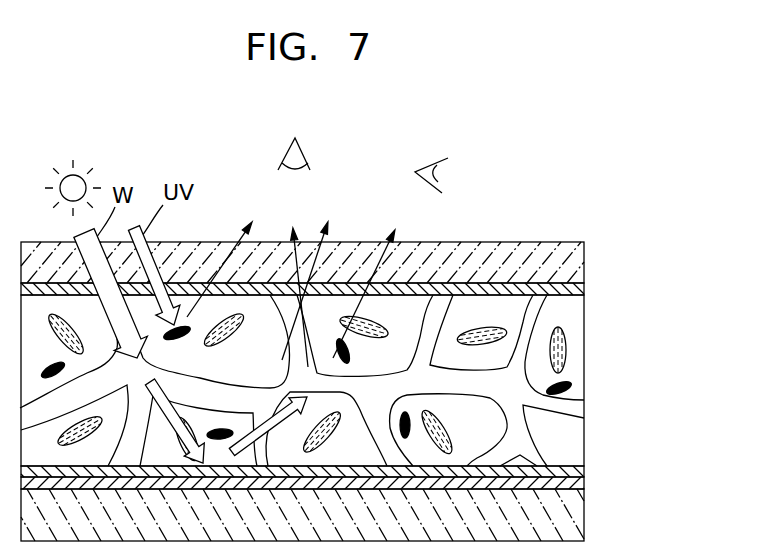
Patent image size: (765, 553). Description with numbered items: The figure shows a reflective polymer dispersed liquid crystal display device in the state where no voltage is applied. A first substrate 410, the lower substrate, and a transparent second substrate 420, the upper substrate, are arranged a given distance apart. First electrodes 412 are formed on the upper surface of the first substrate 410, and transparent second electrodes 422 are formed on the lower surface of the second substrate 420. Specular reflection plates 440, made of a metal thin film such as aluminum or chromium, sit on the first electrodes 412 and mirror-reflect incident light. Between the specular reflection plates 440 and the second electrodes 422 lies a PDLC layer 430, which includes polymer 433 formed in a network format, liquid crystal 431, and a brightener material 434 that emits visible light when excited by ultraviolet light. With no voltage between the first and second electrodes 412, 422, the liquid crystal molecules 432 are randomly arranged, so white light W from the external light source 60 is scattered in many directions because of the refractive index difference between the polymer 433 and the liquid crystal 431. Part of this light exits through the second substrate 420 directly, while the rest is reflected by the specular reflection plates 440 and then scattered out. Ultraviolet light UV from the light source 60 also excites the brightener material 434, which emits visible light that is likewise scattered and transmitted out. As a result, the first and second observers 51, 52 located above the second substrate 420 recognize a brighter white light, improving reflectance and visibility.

The external light source 60 is at (82, 165).
The first observer 51 is at (310, 148).
The second observer 52 is at (450, 173).
The second substrate 420 is at (584, 263).
The second electrodes 422 is at (584, 289).
The PDLC layer 430 is at (377, 380).
The liquid crystal 431 is at (577, 324).
The liquid crystal molecules 432 is at (566, 353).
The polymer 433 is at (577, 411).
The brightener material 434 is at (572, 386).
The specular reflection plates 440 is at (584, 472).
The first electrodes 412 is at (584, 484).
The first substrate 410 is at (584, 516).